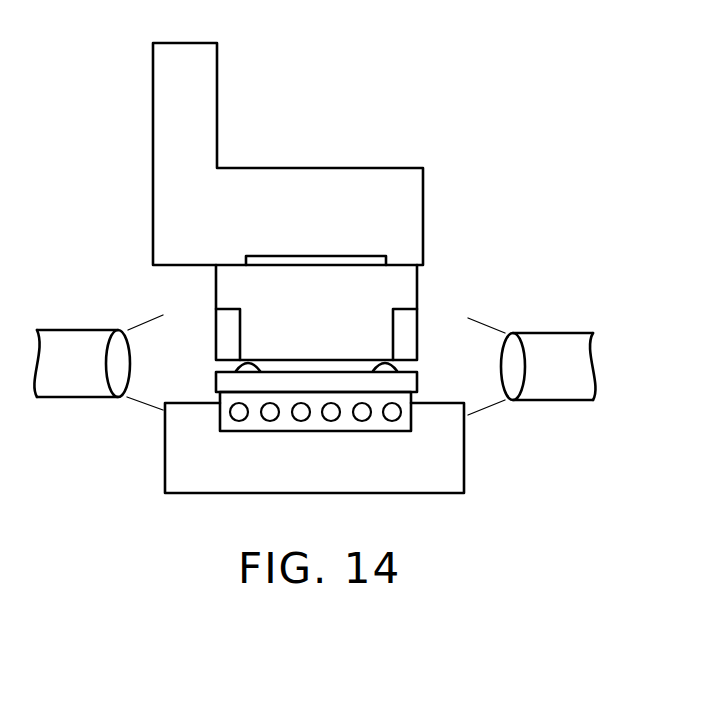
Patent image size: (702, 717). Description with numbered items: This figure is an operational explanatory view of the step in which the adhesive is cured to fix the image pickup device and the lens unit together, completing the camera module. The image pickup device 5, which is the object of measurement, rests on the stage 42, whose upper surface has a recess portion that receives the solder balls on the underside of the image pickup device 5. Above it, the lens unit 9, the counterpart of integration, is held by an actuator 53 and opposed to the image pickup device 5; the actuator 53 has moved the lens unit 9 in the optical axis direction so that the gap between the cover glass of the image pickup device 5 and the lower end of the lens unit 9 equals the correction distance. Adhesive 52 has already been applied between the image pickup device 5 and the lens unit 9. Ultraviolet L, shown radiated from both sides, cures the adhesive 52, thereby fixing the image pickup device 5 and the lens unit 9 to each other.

The actuator 53 is at (322, 185).
The lens unit 9 is at (403, 293).
The adhesive 52 is at (234, 362).
The image pickup device 5 is at (427, 372).
The stage 42 is at (175, 452).
The ultraviolet L is at (497, 417).